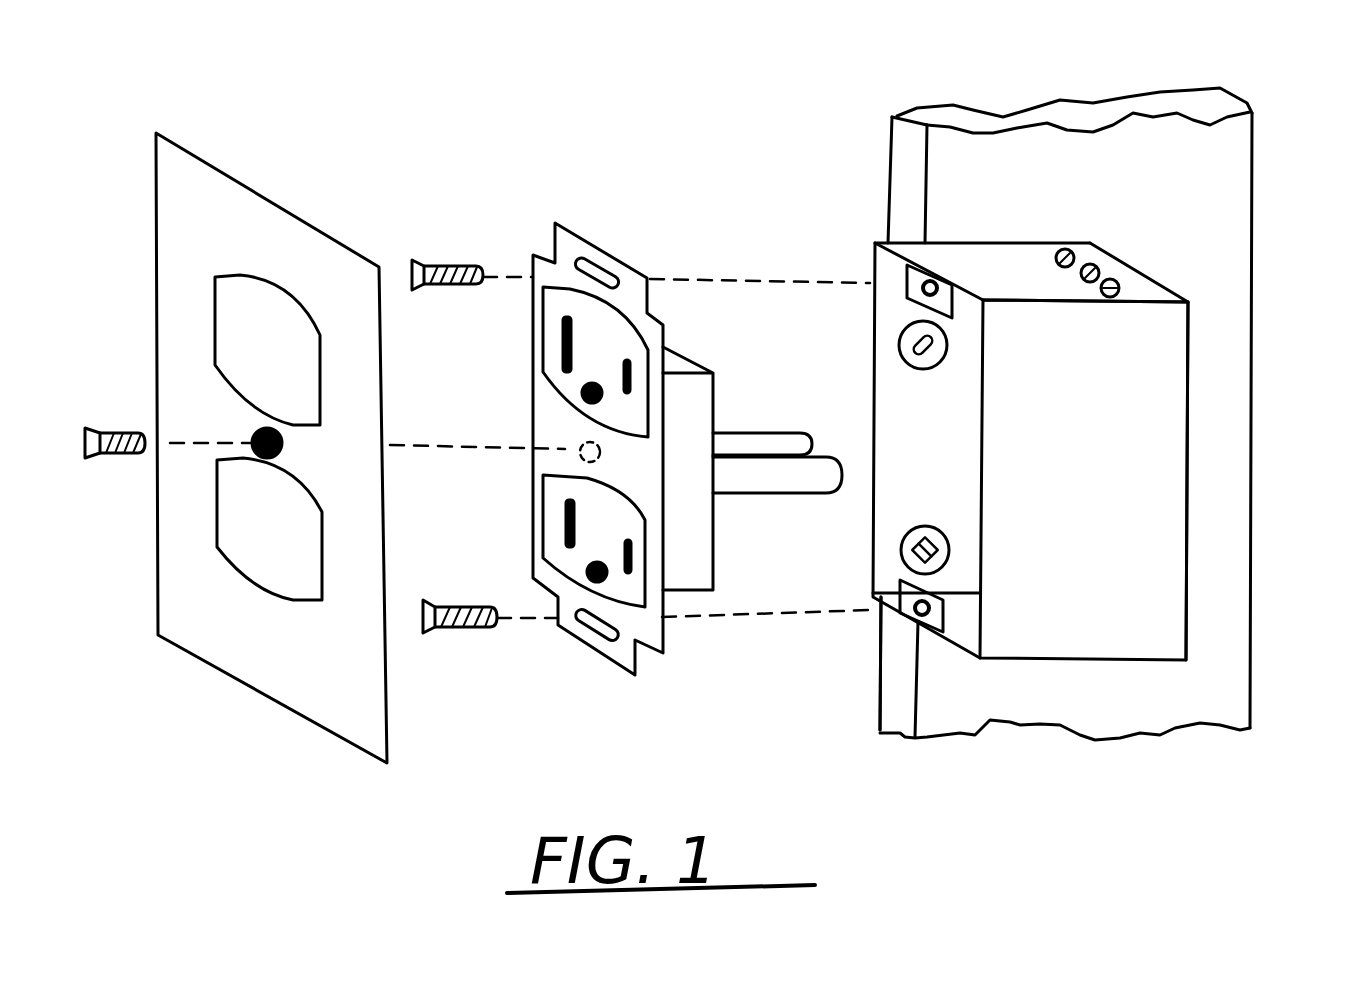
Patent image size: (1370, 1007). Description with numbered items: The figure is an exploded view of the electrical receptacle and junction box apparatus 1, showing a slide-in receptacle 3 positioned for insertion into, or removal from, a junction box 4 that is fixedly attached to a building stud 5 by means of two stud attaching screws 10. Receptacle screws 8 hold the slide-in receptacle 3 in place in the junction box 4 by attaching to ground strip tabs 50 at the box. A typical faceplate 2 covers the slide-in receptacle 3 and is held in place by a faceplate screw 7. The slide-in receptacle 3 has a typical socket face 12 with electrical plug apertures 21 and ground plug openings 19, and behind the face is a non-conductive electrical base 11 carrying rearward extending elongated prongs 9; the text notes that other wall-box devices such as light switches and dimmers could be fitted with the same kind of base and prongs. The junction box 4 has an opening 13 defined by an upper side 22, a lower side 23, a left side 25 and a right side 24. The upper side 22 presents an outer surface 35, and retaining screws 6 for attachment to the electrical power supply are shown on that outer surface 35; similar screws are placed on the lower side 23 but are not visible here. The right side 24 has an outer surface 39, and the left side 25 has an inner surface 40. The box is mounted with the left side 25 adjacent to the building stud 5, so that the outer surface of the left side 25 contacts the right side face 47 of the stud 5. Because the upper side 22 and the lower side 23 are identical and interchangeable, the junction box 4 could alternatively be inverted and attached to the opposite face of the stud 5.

The electrical receptacle and junction box apparatus 1 is at (613, 150).
The faceplate 2 is at (195, 148).
The slide-in receptacle 3 is at (683, 345).
The junction box 4 is at (1190, 567).
The building stud 5 is at (1013, 110).
The retaining screws 6 is at (1070, 248).
The faceplate screw 7 is at (122, 413).
The receptacle screws 8 is at (455, 262).
The elongated prongs 9 is at (745, 432).
The stud attaching screws 10 is at (900, 362).
The non-conductive electrical base 11 is at (697, 592).
The socket face 12 is at (557, 390).
The opening 13 is at (890, 502).
The ground plug openings 19 is at (597, 390).
The electrical plug apertures 21 is at (562, 347).
The upper side 22 is at (972, 260).
The lower side 23 is at (950, 650).
The right side 24 is at (1137, 378).
The left side 25 is at (867, 263).
The outer surface 35 is at (1020, 283).
The outer surface 39 is at (1135, 425).
The inner surface 40 is at (920, 470).
The right side face 47 is at (1203, 685).
The ground strip tabs 50 is at (927, 282).